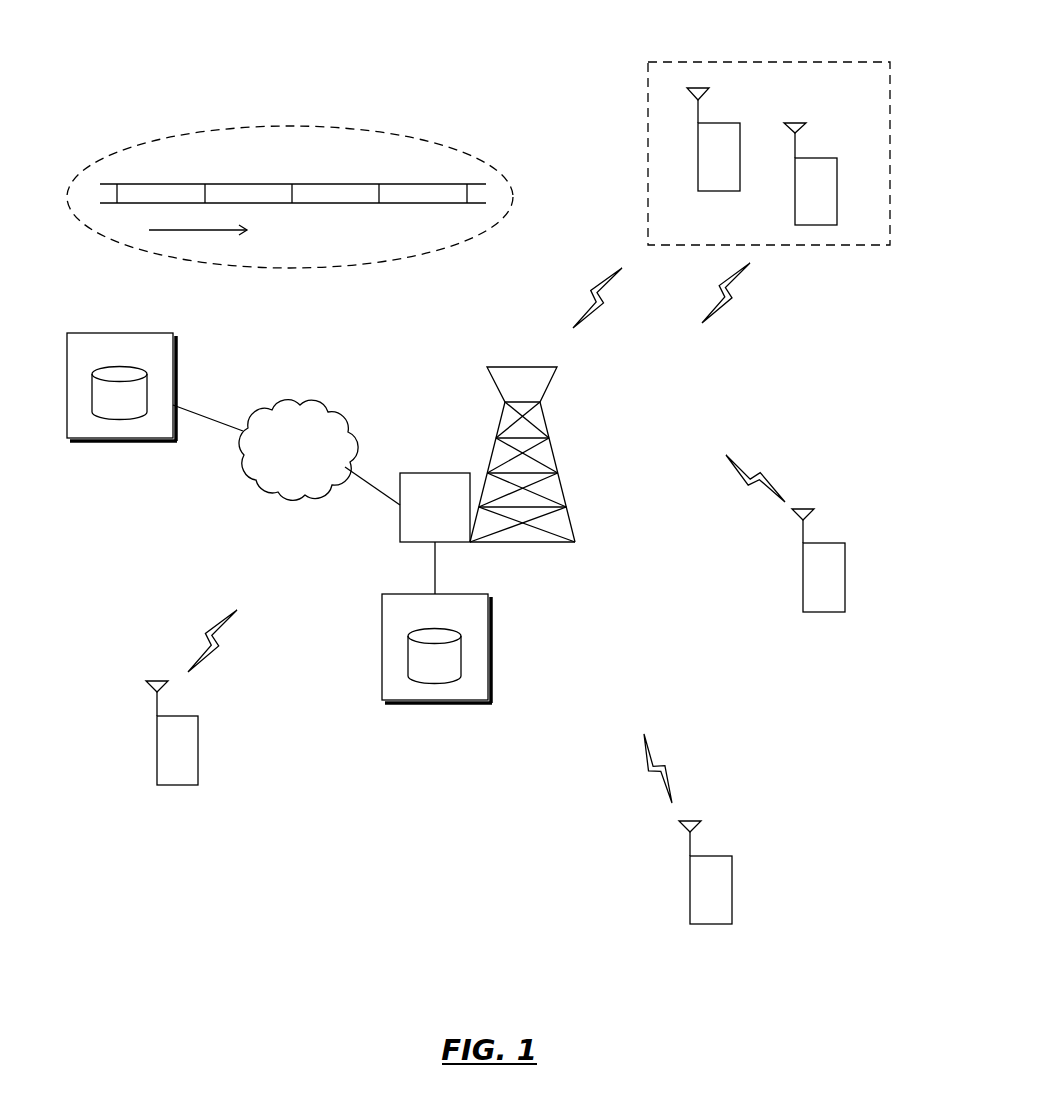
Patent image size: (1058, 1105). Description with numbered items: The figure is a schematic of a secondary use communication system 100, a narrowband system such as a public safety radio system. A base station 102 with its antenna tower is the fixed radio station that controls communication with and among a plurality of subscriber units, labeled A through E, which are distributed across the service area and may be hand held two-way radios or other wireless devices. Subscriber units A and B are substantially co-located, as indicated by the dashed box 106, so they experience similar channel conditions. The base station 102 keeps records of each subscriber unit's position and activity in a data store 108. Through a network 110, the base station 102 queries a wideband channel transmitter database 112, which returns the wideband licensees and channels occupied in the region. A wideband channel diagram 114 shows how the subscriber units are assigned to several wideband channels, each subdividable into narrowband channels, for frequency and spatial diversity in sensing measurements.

The secondary use communication system 100 is at (180, 58).
The base station 102 is at (442, 473).
The box 106 is at (801, 61).
The data store 108 is at (490, 645).
The network 110 is at (283, 495).
The wideband channel transmitter database 112 is at (176, 359).
The wideband channel diagram 114 is at (358, 130).